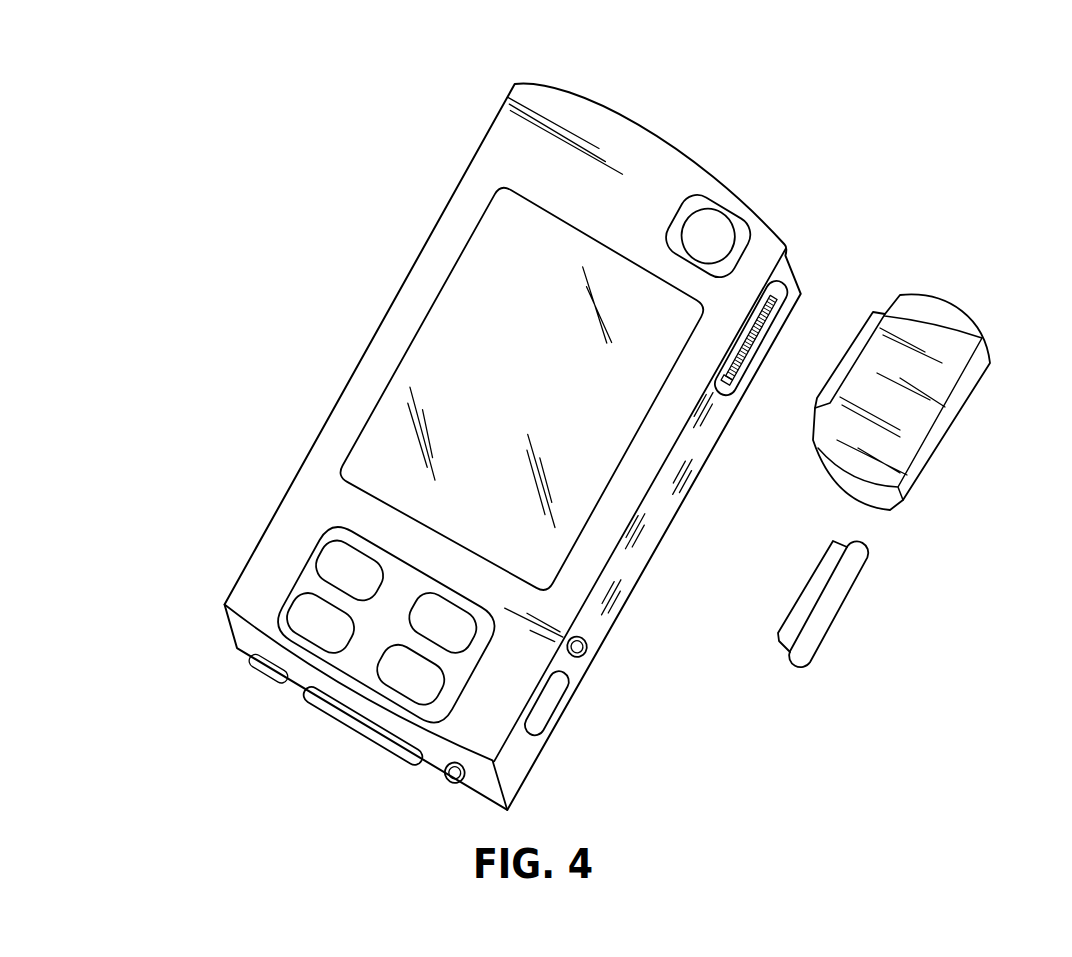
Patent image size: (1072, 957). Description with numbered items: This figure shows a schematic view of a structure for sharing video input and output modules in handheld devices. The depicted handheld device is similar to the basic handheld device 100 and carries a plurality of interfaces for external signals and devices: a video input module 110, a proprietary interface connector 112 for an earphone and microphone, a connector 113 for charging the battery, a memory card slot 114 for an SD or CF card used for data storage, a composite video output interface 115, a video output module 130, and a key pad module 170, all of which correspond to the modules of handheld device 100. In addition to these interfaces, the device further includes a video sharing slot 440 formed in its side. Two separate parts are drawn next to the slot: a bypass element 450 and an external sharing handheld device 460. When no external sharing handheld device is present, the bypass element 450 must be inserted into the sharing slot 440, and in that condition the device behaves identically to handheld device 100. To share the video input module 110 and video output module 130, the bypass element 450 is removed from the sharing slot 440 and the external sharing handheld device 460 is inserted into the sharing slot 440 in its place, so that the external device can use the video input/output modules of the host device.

The handheld device 100 is at (503, 110).
The video input module 110 is at (705, 232).
The video output module 130 is at (467, 300).
The key pad module 170 is at (303, 573).
The video sharing slot 440 is at (768, 310).
The external sharing handheld device 460 is at (930, 340).
The bypass element 450 is at (833, 596).
The composite video output interface 115 is at (590, 647).
The memory card slot 114 is at (543, 707).
The connector for charging battery 113 is at (453, 780).
The proprietary interface connector 112 is at (372, 733).